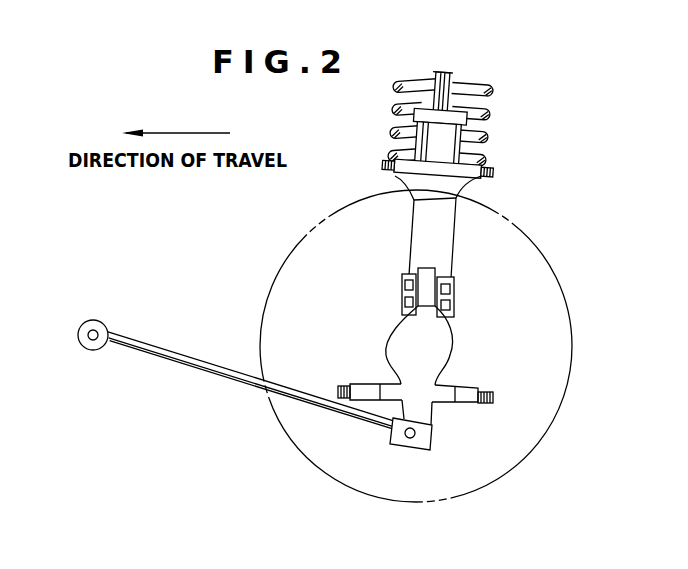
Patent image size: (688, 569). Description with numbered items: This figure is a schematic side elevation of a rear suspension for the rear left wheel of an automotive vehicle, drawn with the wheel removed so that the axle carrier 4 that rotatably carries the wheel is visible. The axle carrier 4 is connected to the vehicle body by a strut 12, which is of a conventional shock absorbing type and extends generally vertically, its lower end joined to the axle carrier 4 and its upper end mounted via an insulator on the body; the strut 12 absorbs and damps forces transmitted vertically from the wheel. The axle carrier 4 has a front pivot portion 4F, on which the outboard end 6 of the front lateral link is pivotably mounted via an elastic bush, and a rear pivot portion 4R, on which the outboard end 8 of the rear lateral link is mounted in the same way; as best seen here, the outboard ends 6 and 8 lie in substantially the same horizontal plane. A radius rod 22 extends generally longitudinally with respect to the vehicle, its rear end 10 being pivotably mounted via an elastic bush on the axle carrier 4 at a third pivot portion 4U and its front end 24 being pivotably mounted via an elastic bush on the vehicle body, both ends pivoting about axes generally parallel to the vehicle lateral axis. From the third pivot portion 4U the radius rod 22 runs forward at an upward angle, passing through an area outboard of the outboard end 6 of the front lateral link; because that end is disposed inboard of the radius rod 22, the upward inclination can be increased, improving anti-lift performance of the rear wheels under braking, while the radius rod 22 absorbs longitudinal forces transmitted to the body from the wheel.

The axle carrier 4 is at (457, 332).
The front pivot portion 4F is at (387, 381).
The rear pivot portion 4R is at (442, 382).
The third pivot portion 4U is at (420, 412).
The outboard end of the front lateral link 6 is at (363, 390).
The outboard end of the rear lateral link 8 is at (470, 393).
The rear end of the radius rod 10 is at (408, 447).
The strut 12 is at (417, 233).
The radius rod 22 is at (182, 355).
The front end of the radius rod 24 is at (100, 320).